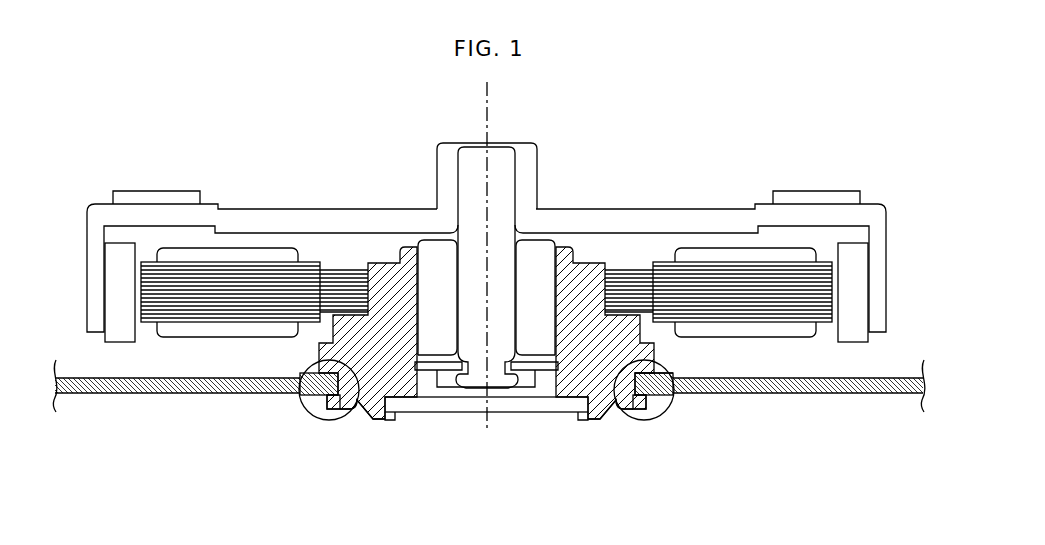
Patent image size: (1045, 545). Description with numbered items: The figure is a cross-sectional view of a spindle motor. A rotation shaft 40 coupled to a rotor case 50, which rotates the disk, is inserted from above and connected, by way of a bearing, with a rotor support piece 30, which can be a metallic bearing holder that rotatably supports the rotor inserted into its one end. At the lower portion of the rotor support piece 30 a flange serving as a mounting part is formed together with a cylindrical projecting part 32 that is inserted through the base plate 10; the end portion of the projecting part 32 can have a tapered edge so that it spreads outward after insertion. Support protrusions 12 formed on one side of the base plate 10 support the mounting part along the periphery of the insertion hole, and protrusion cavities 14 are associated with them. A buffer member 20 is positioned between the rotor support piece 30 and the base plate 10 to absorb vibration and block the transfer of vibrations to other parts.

The base plate 10 is at (860, 395).
The support protrusions 12 is at (655, 372).
The protrusion cavities 14 is at (650, 397).
The buffer member 20 is at (303, 398).
The rotor support piece 30 is at (589, 263).
The projecting part 32 is at (343, 409).
The rotation shaft 40 is at (468, 183).
The rotor case 50 is at (676, 218).